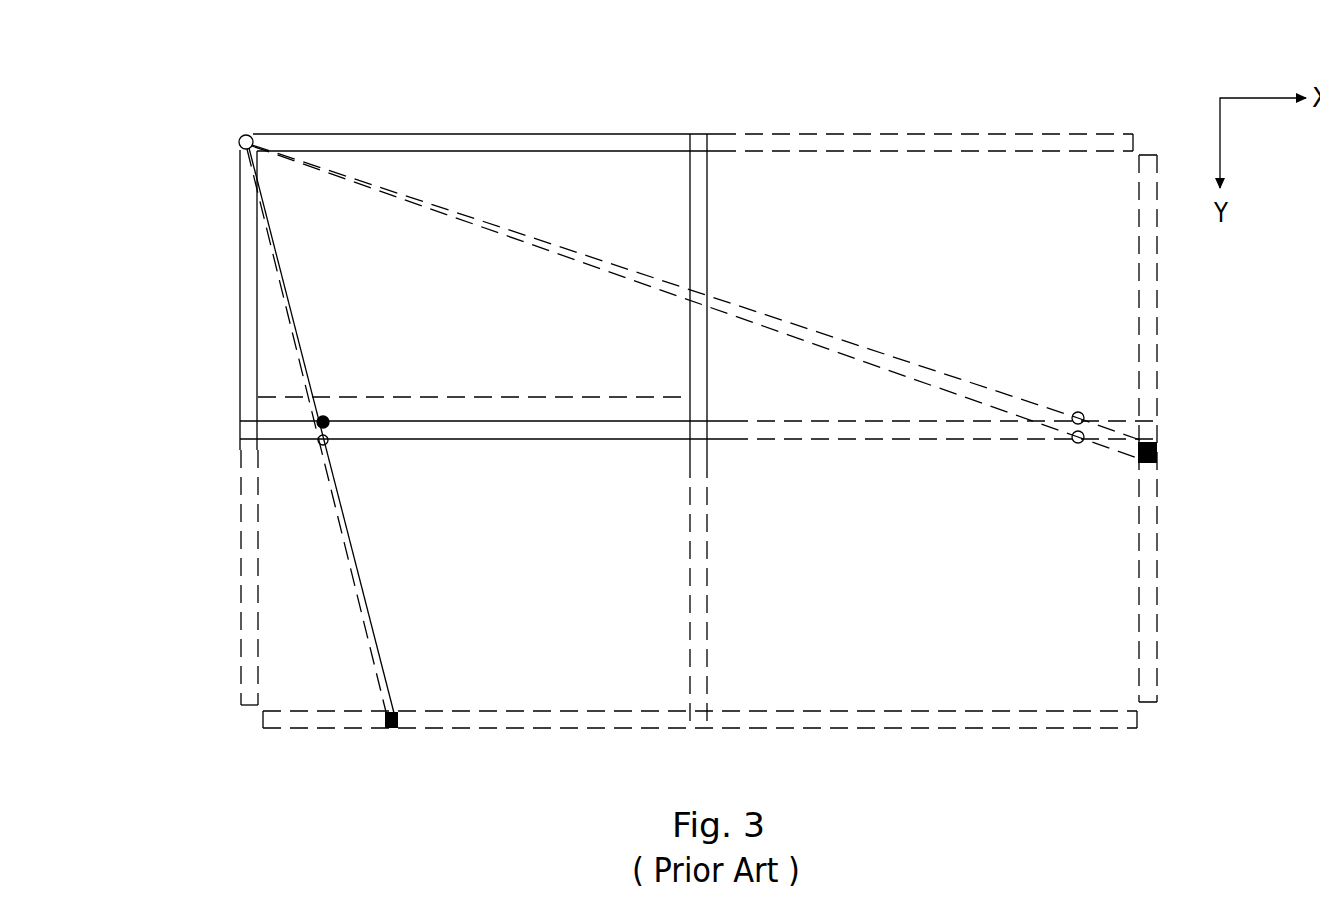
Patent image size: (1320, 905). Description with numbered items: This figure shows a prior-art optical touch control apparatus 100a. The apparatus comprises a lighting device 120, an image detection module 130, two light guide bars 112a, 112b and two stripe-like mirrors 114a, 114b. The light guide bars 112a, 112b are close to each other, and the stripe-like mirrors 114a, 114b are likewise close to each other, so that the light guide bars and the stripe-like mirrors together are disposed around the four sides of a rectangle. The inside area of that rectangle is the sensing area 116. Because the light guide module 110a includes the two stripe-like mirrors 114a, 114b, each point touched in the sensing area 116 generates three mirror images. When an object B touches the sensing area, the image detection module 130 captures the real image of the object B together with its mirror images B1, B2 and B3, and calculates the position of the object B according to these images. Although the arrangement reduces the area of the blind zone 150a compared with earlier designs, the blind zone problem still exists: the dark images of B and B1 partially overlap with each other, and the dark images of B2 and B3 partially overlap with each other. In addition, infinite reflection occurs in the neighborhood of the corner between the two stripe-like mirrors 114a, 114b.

The optical touch control apparatus 100a is at (1275, 738).
The light guide module 110a is at (654, 133).
The light guide bar 112a is at (243, 275).
The light guide bar 112b is at (546, 140).
The stripe-like mirror 114a is at (242, 428).
The stripe-like mirror 114b is at (707, 197).
The sensing area 116 is at (453, 182).
The lighting device 120 is at (245, 134).
The image detection module 130 is at (239, 147).
The blind zone 150a is at (268, 408).
The object B is at (331, 418).
The mirror image B1 is at (318, 447).
The mirror image B2 is at (1079, 411).
The mirror image B3 is at (1078, 444).